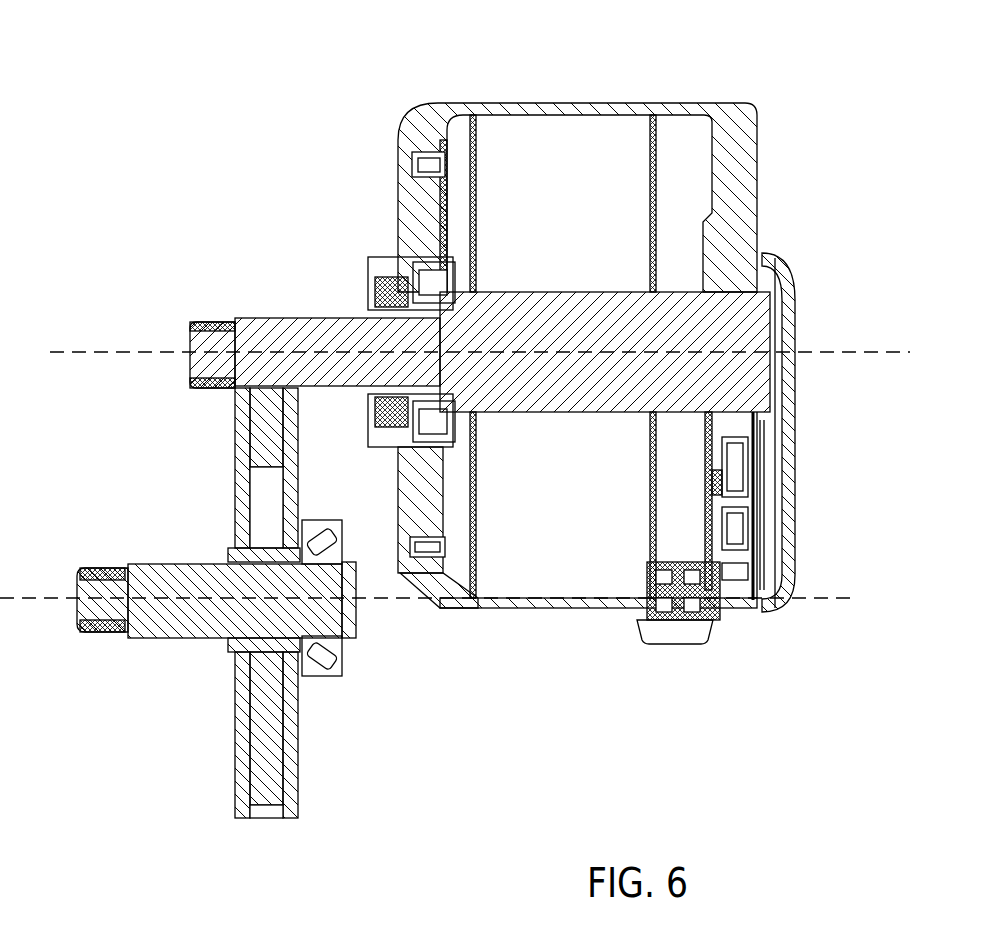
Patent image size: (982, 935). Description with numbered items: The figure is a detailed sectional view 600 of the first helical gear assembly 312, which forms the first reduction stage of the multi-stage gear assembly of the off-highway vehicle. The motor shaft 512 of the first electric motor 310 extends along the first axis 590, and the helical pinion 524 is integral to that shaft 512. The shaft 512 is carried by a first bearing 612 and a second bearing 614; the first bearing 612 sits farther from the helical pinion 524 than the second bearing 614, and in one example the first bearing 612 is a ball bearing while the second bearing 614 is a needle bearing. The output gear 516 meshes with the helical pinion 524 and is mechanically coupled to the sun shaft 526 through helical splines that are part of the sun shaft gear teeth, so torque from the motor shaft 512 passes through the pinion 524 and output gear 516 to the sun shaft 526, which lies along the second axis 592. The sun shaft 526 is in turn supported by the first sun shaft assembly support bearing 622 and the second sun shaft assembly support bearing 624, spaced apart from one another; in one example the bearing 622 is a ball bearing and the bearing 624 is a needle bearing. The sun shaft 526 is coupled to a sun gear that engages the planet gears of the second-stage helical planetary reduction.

The detailed sectional view 600 is at (807, 40).
The first electric motor 310 is at (436, 108).
The first bearing 612 is at (378, 292).
The motor shaft 512 is at (592, 293).
The first axis 590 is at (74, 352).
The second bearing 614 is at (200, 387).
The output gear 516 is at (250, 422).
The second axis 592 is at (63, 598).
The helical pinion 524 is at (78, 617).
The second sun shaft assembly support bearing 624 is at (98, 633).
The sun shaft 526 is at (185, 640).
The first sun shaft assembly support bearing 622 is at (340, 673).
The first helical gear assembly 312 is at (147, 794).